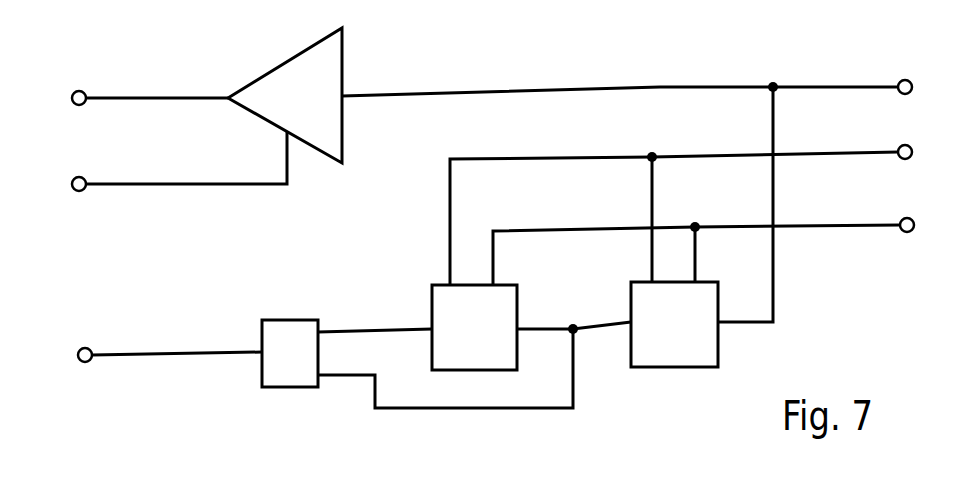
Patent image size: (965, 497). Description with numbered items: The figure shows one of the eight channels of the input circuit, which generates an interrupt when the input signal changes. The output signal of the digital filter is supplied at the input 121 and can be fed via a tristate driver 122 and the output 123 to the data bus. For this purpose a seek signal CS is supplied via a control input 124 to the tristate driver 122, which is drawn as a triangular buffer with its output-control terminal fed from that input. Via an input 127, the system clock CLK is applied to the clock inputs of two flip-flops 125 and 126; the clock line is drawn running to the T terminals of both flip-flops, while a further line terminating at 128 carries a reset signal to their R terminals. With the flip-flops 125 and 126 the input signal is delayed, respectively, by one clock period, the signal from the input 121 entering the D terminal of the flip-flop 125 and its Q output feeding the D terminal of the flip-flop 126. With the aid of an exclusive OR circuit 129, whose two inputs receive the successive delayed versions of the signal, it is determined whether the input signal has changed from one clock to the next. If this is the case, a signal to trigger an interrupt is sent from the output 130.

The input 121 is at (902, 72).
The tristate driver 122 is at (563, 106).
The output 123 is at (127, 88).
The control input 124 is at (157, 166).
The flip-flop 125 is at (673, 227).
The flip-flop 126 is at (448, 329).
The input 127 is at (725, 237).
The reset input terminal 128 is at (703, 203).
The exclusive OR circuit 129 is at (347, 337).
The output 130 is at (147, 349).